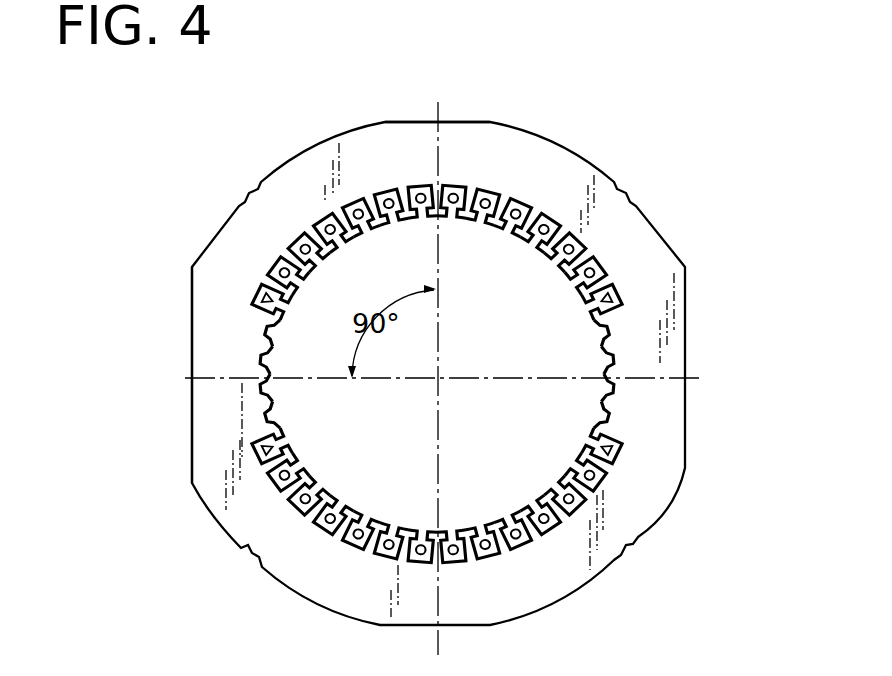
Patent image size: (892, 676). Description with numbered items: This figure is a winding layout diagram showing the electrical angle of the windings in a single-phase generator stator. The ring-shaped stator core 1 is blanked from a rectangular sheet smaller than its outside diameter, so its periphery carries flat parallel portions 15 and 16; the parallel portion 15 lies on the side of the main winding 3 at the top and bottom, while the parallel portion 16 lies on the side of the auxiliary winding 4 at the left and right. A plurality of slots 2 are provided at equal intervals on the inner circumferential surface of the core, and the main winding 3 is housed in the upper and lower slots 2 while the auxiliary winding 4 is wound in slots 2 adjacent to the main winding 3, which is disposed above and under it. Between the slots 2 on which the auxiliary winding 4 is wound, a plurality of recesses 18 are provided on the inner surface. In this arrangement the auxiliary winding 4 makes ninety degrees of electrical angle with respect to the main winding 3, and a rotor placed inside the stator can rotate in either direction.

The stator core 1 is at (632, 235).
The slot 2 is at (617, 460).
The main winding 3 is at (519, 200).
The auxiliary winding 4 is at (617, 295).
The parallel portion 15 is at (413, 121).
The parallel portion 16 is at (190, 405).
The recess 18 is at (610, 387).